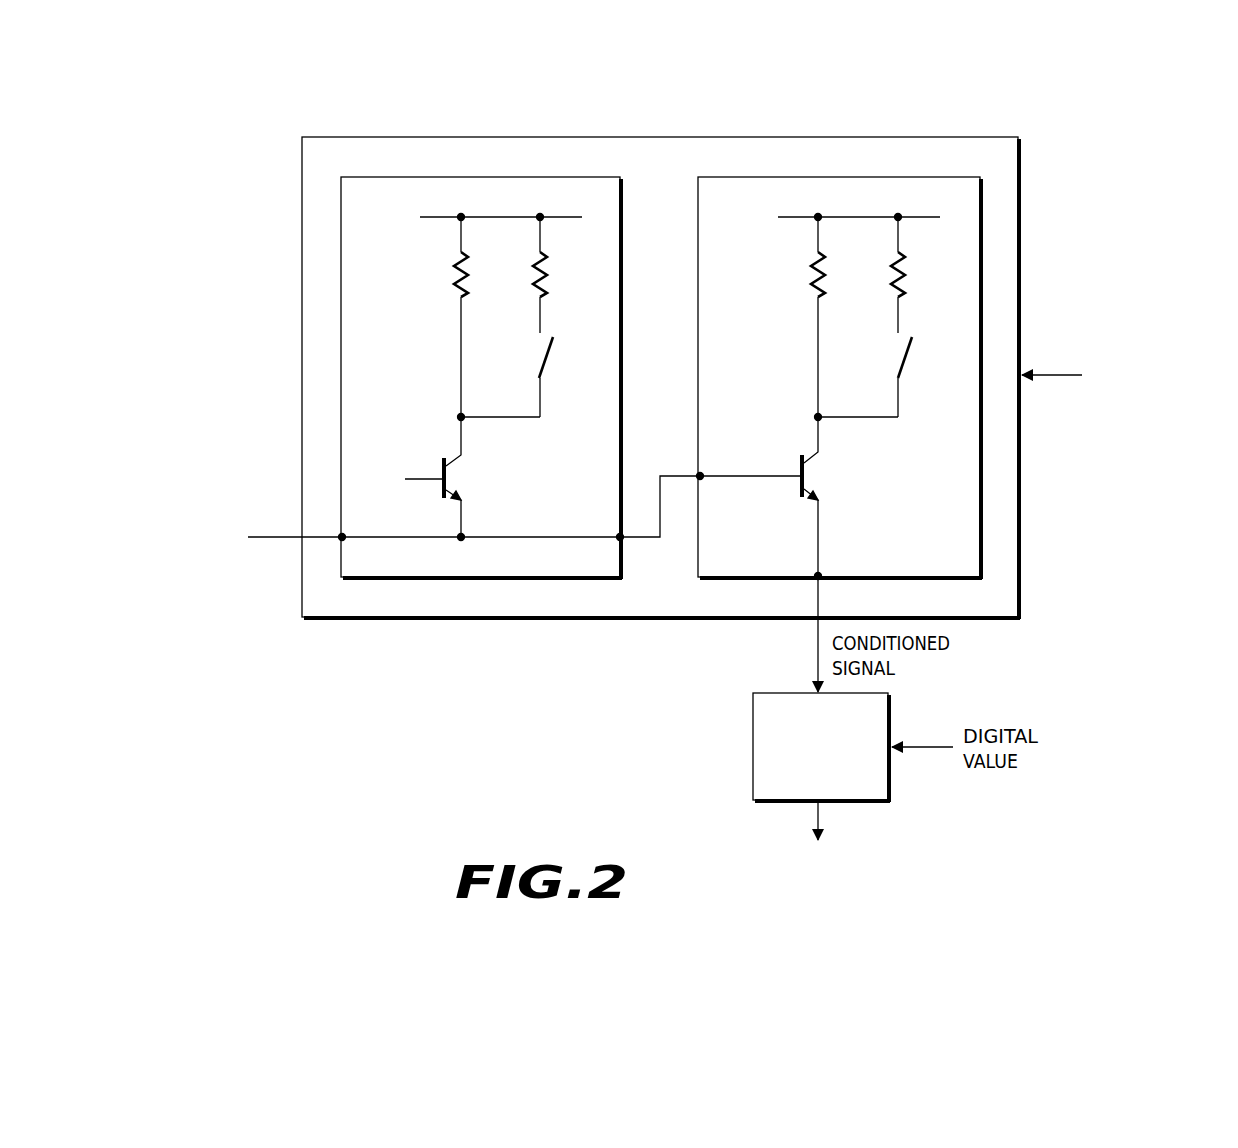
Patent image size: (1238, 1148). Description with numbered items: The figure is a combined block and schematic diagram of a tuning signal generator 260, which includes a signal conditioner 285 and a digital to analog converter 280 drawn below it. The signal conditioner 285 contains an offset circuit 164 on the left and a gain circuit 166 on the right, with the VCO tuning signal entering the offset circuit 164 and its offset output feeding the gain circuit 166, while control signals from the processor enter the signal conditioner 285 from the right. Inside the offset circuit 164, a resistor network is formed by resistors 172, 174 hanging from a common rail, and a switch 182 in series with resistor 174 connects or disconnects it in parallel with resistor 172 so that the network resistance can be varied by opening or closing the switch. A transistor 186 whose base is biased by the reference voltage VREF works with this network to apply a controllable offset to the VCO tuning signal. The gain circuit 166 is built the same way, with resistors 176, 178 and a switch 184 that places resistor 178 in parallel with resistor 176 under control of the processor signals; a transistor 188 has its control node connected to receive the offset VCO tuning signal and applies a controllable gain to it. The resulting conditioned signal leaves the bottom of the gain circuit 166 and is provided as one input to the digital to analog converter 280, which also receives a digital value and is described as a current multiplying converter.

The offset circuit 164 is at (400, 224).
The gain circuit 166 is at (759, 224).
The resistor 172 is at (456, 280).
The resistor 174 is at (535, 280).
The resistor 176 is at (813, 280).
The resistor 178 is at (893, 280).
The switch 182 is at (552, 352).
The switch 184 is at (911, 352).
The transistor 186 is at (444, 458).
The transistor 188 is at (802, 456).
The tuning signal generator 260 is at (518, 740).
The digital to analog converter 280 is at (872, 785).
The signal conditioner 285 is at (1020, 573).